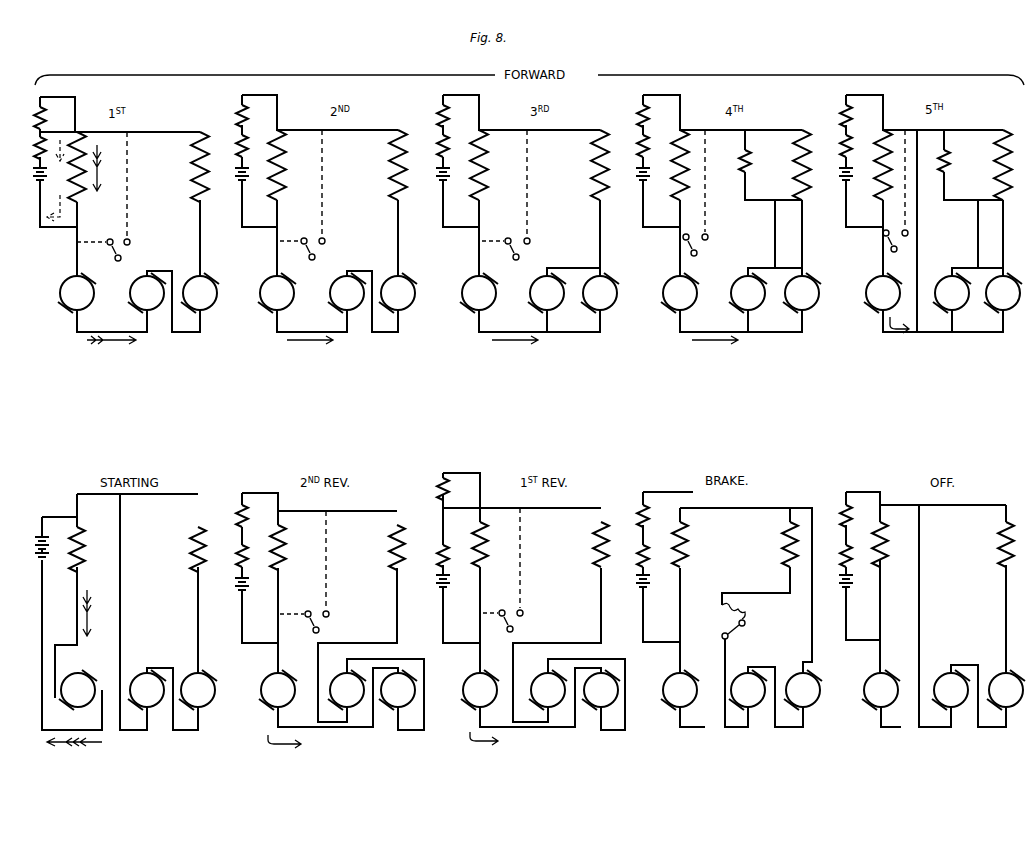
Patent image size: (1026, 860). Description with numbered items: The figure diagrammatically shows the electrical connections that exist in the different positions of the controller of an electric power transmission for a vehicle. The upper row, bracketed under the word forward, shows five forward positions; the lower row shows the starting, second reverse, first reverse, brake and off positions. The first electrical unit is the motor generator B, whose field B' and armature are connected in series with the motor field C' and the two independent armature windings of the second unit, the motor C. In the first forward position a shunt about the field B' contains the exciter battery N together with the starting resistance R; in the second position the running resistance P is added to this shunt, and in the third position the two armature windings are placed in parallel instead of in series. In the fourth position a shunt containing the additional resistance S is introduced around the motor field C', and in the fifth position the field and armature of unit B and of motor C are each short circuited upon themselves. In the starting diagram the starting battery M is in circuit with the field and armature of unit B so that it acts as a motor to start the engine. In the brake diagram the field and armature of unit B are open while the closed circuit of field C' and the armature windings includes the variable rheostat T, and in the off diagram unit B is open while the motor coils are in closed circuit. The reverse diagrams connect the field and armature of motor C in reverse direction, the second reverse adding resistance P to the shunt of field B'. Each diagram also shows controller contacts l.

The starting resistance R is at (40, 118).
The running resistance P is at (860, 510).
The exciter battery N is at (40, 183).
The starting battery M is at (42, 540).
The field of generator B B' is at (502, 361).
The motor generator B is at (887, 551).
The motor field C' is at (587, 358).
The additional resistance S is at (740, 160).
The rheostat T is at (719, 610).
The switch contact l is at (492, 384).